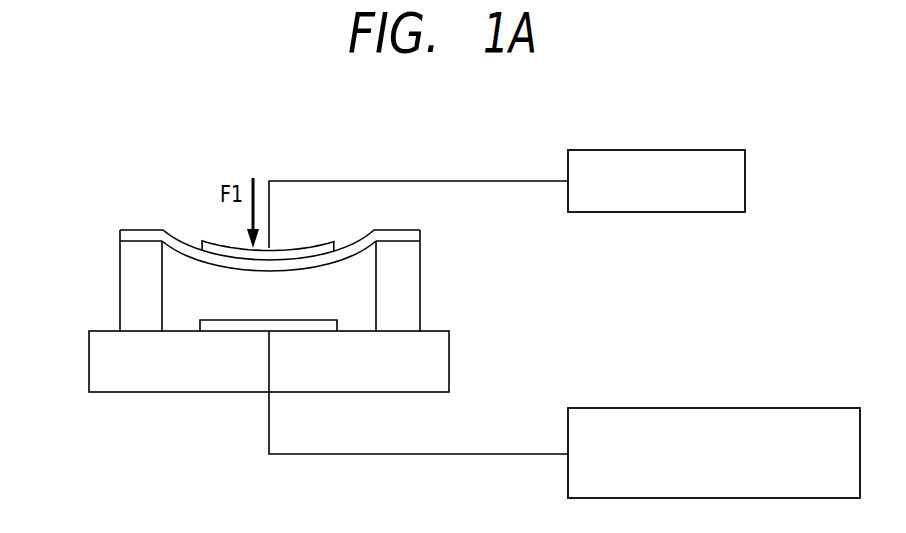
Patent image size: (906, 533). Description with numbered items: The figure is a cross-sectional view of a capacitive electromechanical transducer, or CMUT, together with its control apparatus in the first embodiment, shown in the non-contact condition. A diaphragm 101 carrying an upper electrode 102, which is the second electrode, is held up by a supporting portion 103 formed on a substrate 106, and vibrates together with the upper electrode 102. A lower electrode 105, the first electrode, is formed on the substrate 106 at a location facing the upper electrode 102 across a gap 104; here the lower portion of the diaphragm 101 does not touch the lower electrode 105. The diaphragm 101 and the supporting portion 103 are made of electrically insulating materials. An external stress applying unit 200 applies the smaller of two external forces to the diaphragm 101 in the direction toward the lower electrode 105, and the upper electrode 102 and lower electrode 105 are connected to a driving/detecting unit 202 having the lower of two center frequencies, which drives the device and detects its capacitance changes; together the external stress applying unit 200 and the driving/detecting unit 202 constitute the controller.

The diaphragm 101 is at (141, 236).
The upper electrode 102 is at (217, 243).
The supporting portion 103 is at (128, 288).
The gap 104 is at (303, 294).
The lower electrode 105 is at (223, 328).
The substrate 106 is at (237, 383).
The external stress applying unit 200 is at (660, 150).
The driving/detecting unit 202 is at (722, 408).